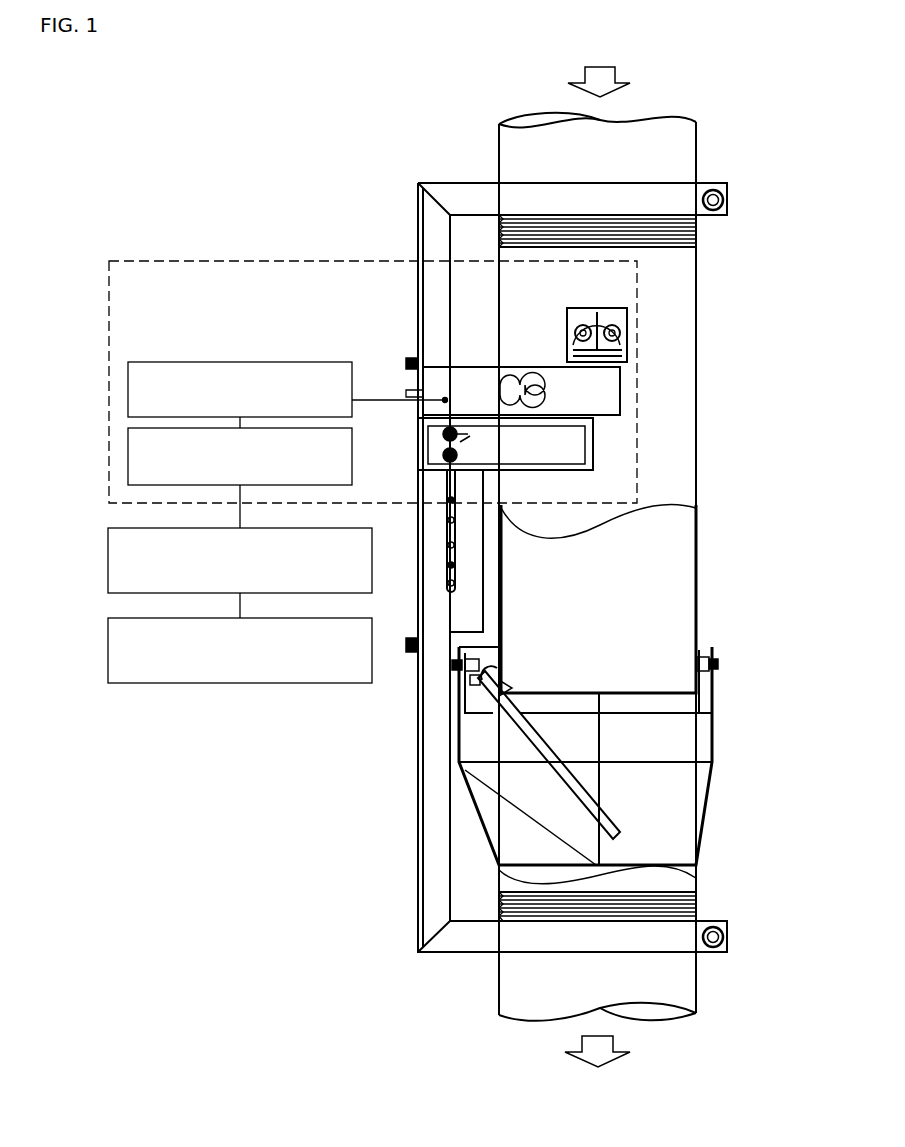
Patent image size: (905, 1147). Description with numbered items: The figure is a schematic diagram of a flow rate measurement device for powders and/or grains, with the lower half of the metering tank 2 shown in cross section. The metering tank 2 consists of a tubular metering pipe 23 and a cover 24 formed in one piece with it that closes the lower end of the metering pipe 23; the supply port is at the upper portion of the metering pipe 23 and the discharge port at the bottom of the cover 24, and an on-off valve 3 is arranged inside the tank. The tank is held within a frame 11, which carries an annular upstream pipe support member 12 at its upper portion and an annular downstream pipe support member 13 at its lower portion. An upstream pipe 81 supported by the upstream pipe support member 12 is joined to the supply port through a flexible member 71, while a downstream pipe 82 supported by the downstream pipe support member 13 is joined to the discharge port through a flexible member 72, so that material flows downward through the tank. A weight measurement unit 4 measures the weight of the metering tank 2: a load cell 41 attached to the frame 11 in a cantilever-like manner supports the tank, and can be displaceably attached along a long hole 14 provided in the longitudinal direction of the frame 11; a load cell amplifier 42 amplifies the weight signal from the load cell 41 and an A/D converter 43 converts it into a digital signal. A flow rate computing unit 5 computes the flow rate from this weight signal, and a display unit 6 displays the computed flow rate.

The metering tank 2 is at (742, 463).
The on-off valve 3 is at (596, 793).
The weight measurement unit 4 is at (140, 262).
The flow rate computing unit 5 is at (108, 560).
The display unit 6 is at (108, 650).
The frame 11 is at (435, 771).
The upstream pipe support member 12 is at (655, 197).
The downstream pipe support member 13 is at (648, 937).
The long hole 14 is at (447, 570).
The metering pipe 23 is at (682, 393).
The cover 24 is at (670, 814).
The load cell 41 is at (445, 382).
The load cell amplifier 42 is at (128, 388).
The A/D converter 43 is at (128, 455).
The flexible member 71 is at (678, 232).
The flexible member 72 is at (680, 907).
The upstream pipe 81 is at (665, 140).
The downstream pipe 82 is at (668, 985).